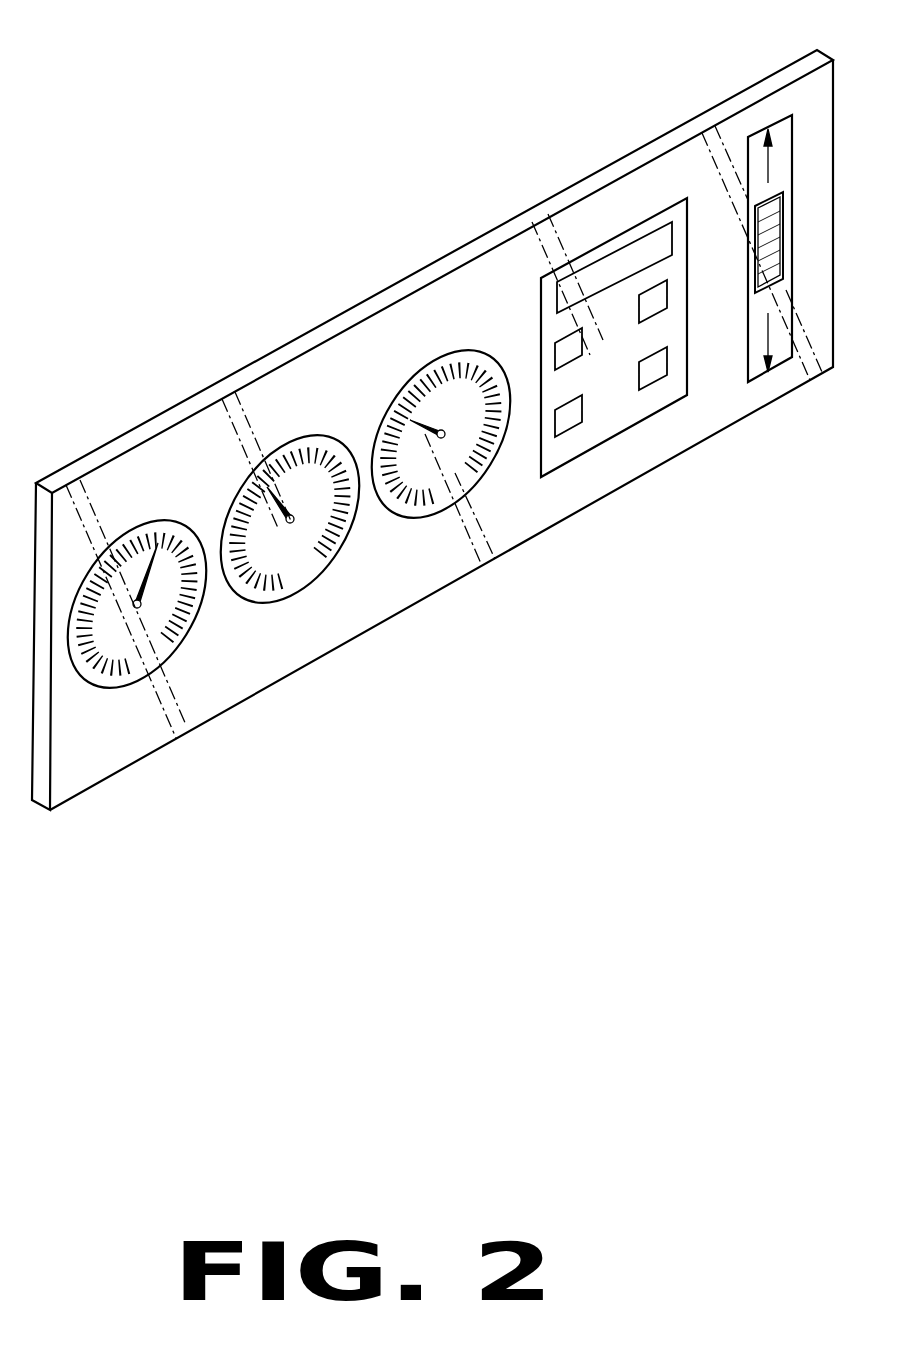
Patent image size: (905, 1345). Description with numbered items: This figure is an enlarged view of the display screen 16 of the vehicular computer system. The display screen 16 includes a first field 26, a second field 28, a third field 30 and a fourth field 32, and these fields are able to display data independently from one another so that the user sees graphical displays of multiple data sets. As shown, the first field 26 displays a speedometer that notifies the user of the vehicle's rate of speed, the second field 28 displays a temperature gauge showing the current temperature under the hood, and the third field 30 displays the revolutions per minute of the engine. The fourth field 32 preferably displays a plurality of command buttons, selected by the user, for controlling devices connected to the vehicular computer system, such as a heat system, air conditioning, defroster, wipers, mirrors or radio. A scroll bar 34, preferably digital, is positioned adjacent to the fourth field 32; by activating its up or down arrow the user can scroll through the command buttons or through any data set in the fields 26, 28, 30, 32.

The display screen 16 is at (255, 382).
The first field 26 is at (136, 527).
The second field 28 is at (320, 432).
The third field 30 is at (470, 347).
The fourth field 32 is at (648, 215).
The scroll bar 34 is at (792, 117).